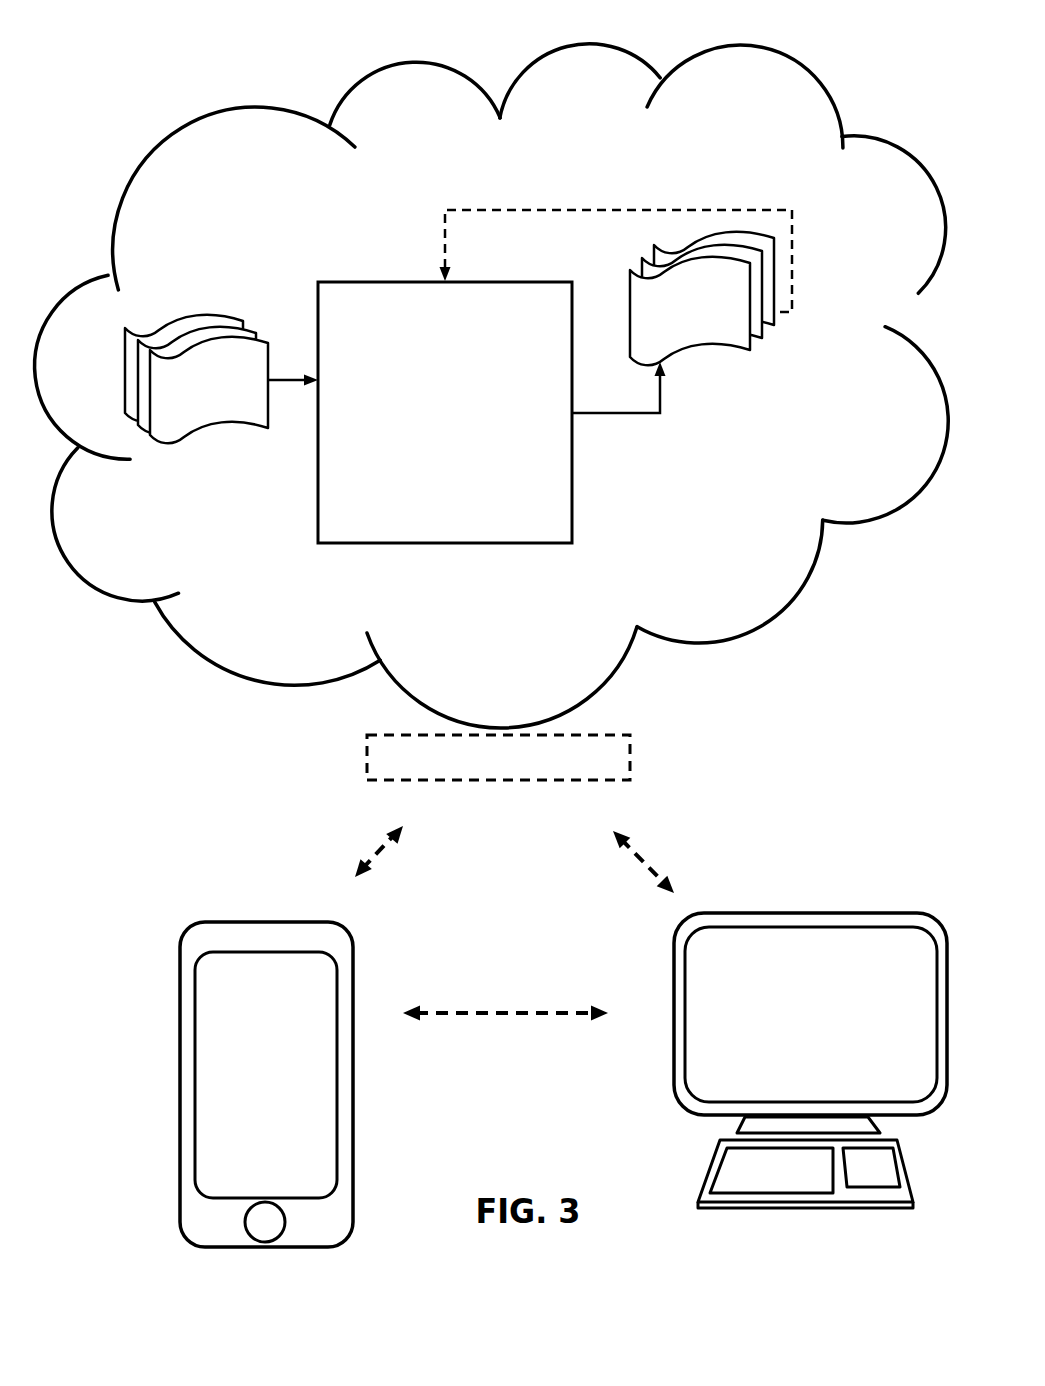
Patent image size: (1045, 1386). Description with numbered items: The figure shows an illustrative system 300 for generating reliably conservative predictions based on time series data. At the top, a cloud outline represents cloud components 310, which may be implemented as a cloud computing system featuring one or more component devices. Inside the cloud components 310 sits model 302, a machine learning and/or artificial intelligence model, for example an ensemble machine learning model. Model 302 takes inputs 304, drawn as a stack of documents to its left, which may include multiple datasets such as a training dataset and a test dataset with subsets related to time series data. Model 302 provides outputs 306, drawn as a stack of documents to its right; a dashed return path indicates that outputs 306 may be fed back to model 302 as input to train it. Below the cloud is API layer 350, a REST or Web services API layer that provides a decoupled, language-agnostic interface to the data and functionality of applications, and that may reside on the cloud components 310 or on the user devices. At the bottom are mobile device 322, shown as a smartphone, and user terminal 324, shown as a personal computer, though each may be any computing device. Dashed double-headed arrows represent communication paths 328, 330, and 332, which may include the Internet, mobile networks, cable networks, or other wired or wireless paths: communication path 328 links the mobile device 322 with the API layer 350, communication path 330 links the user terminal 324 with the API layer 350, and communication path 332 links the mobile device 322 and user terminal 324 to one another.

The system 300 is at (473, 26).
The cloud components 310 is at (472, 181).
The model 302 is at (522, 424).
The inputs 304 is at (208, 318).
The outputs 306 is at (690, 349).
The API layer 350 is at (473, 793).
The mobile device 322 is at (255, 892).
The user terminal 324 is at (804, 898).
The communication path 328 is at (355, 840).
The communication path 330 is at (651, 830).
The communication path 332 is at (492, 995).